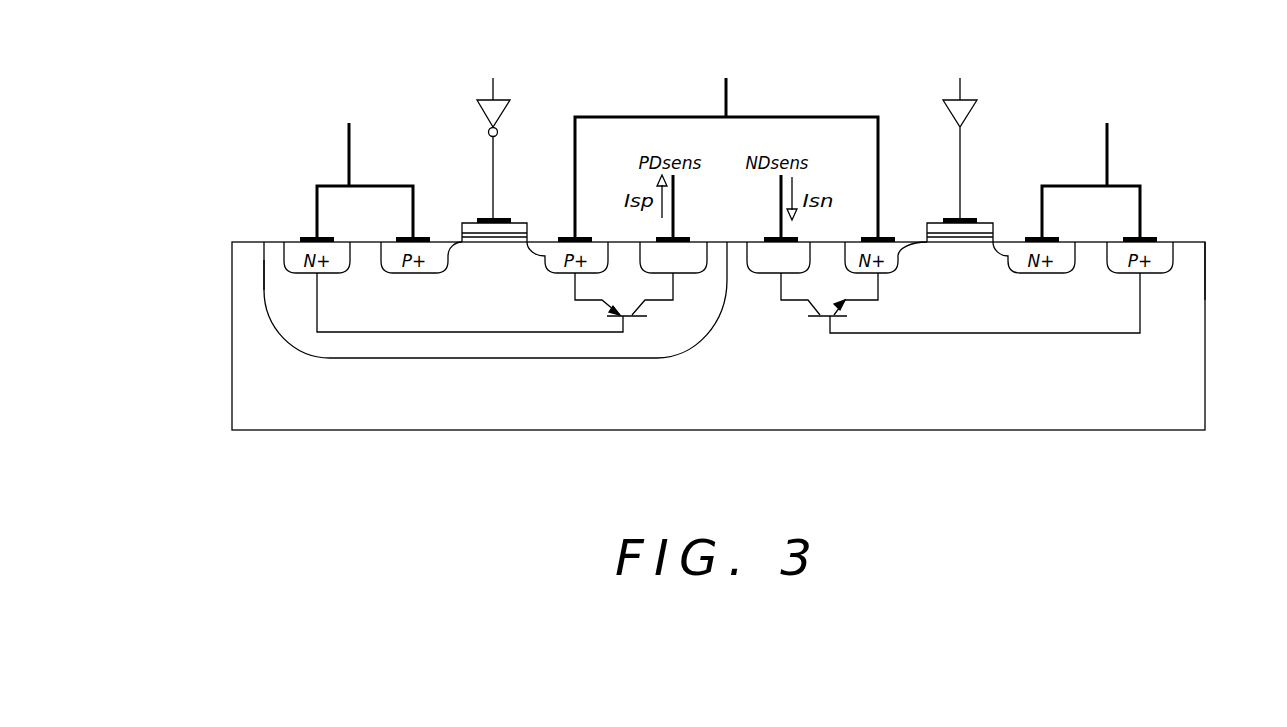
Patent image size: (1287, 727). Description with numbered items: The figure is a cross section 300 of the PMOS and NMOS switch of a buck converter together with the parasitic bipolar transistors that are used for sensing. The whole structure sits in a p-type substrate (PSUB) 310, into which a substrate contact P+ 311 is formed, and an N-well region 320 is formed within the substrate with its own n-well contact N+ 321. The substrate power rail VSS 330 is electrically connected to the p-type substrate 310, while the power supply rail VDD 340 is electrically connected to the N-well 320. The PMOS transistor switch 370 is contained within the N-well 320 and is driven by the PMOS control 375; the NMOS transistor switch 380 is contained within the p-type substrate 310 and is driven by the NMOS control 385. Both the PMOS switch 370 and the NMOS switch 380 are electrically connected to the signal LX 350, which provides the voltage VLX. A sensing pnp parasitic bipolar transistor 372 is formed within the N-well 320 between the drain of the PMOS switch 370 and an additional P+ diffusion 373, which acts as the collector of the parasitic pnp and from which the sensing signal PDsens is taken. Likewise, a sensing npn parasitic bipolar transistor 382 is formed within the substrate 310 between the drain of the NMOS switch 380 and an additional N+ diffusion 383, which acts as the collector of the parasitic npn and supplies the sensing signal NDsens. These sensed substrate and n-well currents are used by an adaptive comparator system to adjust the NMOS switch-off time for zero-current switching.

The cross section 300 is at (222, 190).
The p-type substrate (PSUB) 310 is at (1183, 358).
The substrate contact P+ 311 is at (1183, 272).
The N-well region 320 is at (273, 360).
The n-well contact N+ 321 is at (273, 272).
The substrate power rail VSS 330 is at (1100, 94).
The power supply rail VDD 340 is at (355, 94).
The signal LX 350 is at (732, 47).
The PMOS transistor switch 370 is at (472, 226).
The sensing pnp parasitic bipolar transistor 372 is at (613, 348).
The additional P+ diffusion 373 is at (687, 273).
The PMOS control 375 is at (507, 53).
The NMOS transistor switch 380 is at (982, 230).
The sensing npn parasitic bipolar transistor 382 is at (825, 348).
The additional N+ diffusion 383 is at (770, 273).
The NMOS control 385 is at (948, 51).